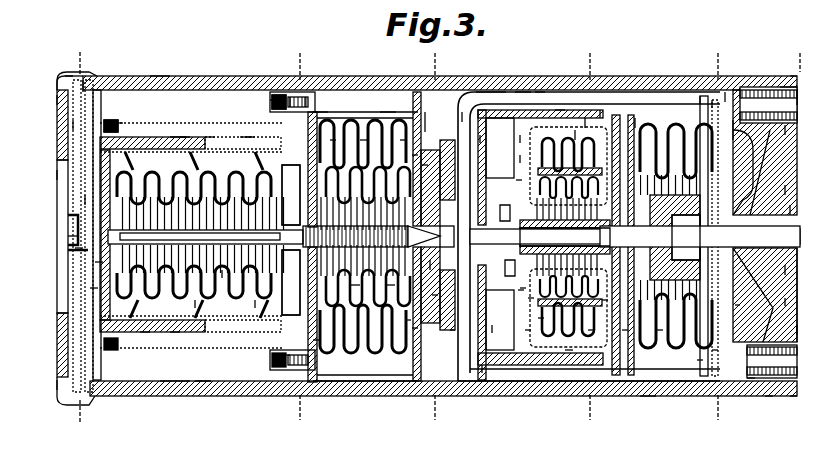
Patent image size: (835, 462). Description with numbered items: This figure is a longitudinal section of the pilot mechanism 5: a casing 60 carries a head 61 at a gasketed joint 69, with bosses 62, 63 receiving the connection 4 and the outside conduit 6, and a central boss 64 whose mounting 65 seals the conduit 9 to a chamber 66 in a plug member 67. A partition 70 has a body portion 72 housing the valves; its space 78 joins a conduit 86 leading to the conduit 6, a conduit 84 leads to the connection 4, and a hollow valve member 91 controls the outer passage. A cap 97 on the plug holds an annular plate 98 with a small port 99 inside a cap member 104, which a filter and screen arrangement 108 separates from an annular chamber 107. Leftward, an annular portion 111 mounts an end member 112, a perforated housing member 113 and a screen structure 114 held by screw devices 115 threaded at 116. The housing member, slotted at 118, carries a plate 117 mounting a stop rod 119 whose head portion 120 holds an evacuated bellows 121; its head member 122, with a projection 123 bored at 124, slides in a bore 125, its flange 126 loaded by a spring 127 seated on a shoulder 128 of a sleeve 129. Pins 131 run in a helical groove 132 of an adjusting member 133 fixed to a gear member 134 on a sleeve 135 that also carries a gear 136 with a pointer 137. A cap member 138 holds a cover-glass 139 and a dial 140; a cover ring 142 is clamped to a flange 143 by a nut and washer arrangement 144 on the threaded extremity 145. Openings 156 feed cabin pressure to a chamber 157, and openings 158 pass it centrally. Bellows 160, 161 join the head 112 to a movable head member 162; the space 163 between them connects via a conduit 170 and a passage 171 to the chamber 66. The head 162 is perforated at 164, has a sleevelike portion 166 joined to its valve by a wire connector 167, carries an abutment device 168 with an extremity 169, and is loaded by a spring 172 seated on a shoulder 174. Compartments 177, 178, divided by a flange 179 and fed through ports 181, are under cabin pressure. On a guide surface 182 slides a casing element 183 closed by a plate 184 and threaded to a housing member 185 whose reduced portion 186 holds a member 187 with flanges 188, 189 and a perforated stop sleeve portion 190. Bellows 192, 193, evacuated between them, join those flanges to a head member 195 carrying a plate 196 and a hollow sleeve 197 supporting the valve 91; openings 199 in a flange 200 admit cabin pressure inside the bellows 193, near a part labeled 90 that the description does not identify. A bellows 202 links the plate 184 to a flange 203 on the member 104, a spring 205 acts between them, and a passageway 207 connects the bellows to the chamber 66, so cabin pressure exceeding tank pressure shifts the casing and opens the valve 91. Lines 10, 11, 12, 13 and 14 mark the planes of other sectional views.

The connection 4 is at (797, 80).
The pilot mechanism 5 is at (178, 396).
The conduit 6 is at (797, 396).
The conduit 9 is at (95, 427).
The section line 10 is at (325, 424).
The section line 11 is at (450, 424).
The section line 12 is at (703, 424).
The section line 13 is at (577, 424).
The section line 14 is at (740, 167).
The casing 60 is at (490, 92).
The head 61 is at (790, 87).
The boss 62 is at (797, 100).
The boss 63 is at (770, 396).
The central boss 64 is at (790, 302).
The mounting 65 is at (790, 270).
The chamber 66 is at (740, 300).
The plug member 67 is at (800, 330).
The gasketed joint 69 is at (726, 92).
The partition 70 is at (427, 112).
The body portion 72 is at (485, 373).
The space 78 is at (486, 140).
The conduit 84 is at (524, 92).
The conduit 86 is at (496, 333).
The plate 90 is at (511, 213).
The valve member 91 is at (516, 268).
The cap 97 is at (700, 365).
The annular plate 98 is at (715, 355).
The port 99 is at (686, 237).
The cap member 104 is at (735, 125).
The annular chamber 107 is at (752, 381).
The filter and screen arrangement 108 is at (790, 130).
The annular portion 111 is at (308, 97).
The annular end member 112 is at (283, 95).
The cylindrical housing member 113 is at (214, 137).
The cylindrical screen structure 114 is at (160, 76).
The screw devices 115 is at (272, 100).
The threaded engagement 116 is at (325, 112).
The transverse plate 117 is at (85, 200).
The longitudinal slots 118 is at (178, 137).
The stop rod 119 is at (200, 308).
The enlarged head portion 120 is at (95, 290).
The bellows 121 is at (225, 278).
The head member 122 is at (258, 308).
The central projection 123 is at (292, 225).
The bore 124 is at (290, 282).
The cylindrical bore 125 is at (335, 140).
The peripheral flange 126 is at (288, 370).
The spring 127 is at (247, 137).
The shoulder 128 is at (120, 123).
The sleeve 129 is at (185, 137).
The pins 131 is at (114, 120).
The helical groove 132 is at (175, 332).
The adjusting member 133 is at (145, 332).
The gear member 134 is at (60, 386).
The sleeve 135 is at (100, 265).
The gear 136 is at (90, 78).
The pointer 137 is at (73, 125).
The cap member 138 is at (70, 78).
The cover-glass 139 is at (57, 100).
The dial 140 is at (62, 90).
The cover ring 142 is at (60, 176).
The flange 143 is at (68, 238).
The nut and washer arrangement 144 is at (68, 218).
The threaded extremity 145 is at (76, 250).
The openings 156 is at (292, 97).
The chamber 157 is at (388, 112).
The openings 158 is at (250, 137).
The bellows 160 is at (405, 140).
The bellows 161 is at (415, 155).
The movable head member 162 is at (415, 330).
The space 163 is at (365, 140).
The perforation 164 is at (425, 165).
The sleevelike portion 166 is at (390, 290).
The wire connector 167 is at (408, 325).
The adjustable abutment device 168 is at (355, 290).
The extremity 169 is at (318, 345).
The conduit 170 is at (433, 270).
The passage 171 is at (790, 190).
The spring 172 is at (466, 112).
The annular shoulder 174 is at (455, 335).
The compartment 177 is at (540, 92).
The compartment 178 is at (637, 118).
The annular flange 179 is at (560, 110).
The ports 181 is at (435, 298).
The guide surface 182 is at (588, 118).
The casing element 183 is at (578, 130).
The platelike portion 184 is at (603, 110).
The housing member 185 is at (522, 140).
The reduced annular portion 186 is at (524, 160).
The member 187 is at (531, 300).
The inwardly projecting flange 188 is at (540, 320).
The outwardly projecting flange 189 is at (521, 295).
The stop sleeve portion 190 is at (528, 335).
The bellows 192 is at (570, 353).
The bellows 193 is at (565, 237).
The annular head member 195 is at (605, 305).
The plate 196 is at (625, 335).
The hollow sleeve 197 is at (591, 335).
The openings 199 is at (519, 184).
The flange 200 is at (522, 291).
The bellows 202 is at (702, 96).
The flange 203 is at (714, 100).
The spring 205 is at (660, 335).
The passageway 207 is at (647, 429).